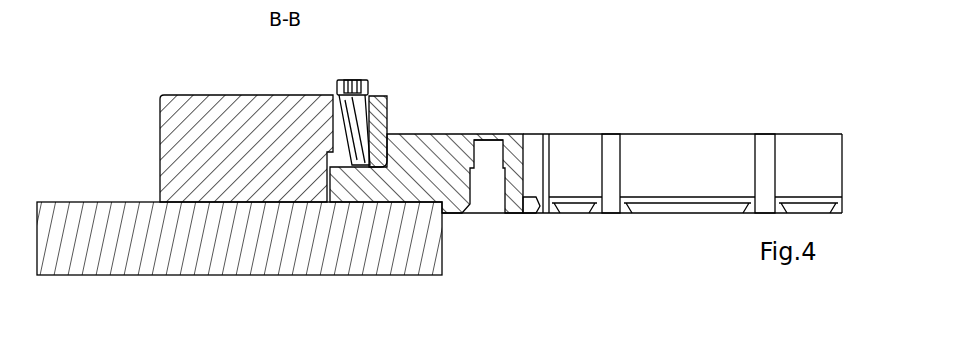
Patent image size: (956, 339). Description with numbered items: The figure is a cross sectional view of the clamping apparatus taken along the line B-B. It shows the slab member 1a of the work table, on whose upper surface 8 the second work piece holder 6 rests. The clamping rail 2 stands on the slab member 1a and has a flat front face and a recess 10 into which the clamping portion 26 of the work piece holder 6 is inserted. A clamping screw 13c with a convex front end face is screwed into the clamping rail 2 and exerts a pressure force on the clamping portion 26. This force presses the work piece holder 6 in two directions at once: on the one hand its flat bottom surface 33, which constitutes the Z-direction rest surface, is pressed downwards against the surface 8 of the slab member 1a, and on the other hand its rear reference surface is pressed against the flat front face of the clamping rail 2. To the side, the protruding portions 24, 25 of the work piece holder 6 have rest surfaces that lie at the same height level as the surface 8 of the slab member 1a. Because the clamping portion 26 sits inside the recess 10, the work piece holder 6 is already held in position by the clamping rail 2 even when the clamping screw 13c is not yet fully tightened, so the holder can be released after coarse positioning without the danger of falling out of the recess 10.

The slab member 1a is at (278, 263).
The clamping rail 2 is at (213, 100).
The second work piece holder 6 is at (443, 143).
The surface of the slab member 8 is at (126, 196).
The recess 10 is at (376, 153).
The clamping screw 13c is at (350, 79).
The protruding portion 24 is at (532, 190).
The protruding portion 25 is at (668, 190).
The clamping portion 26 is at (367, 193).
The flat bottom surface 33 is at (413, 210).